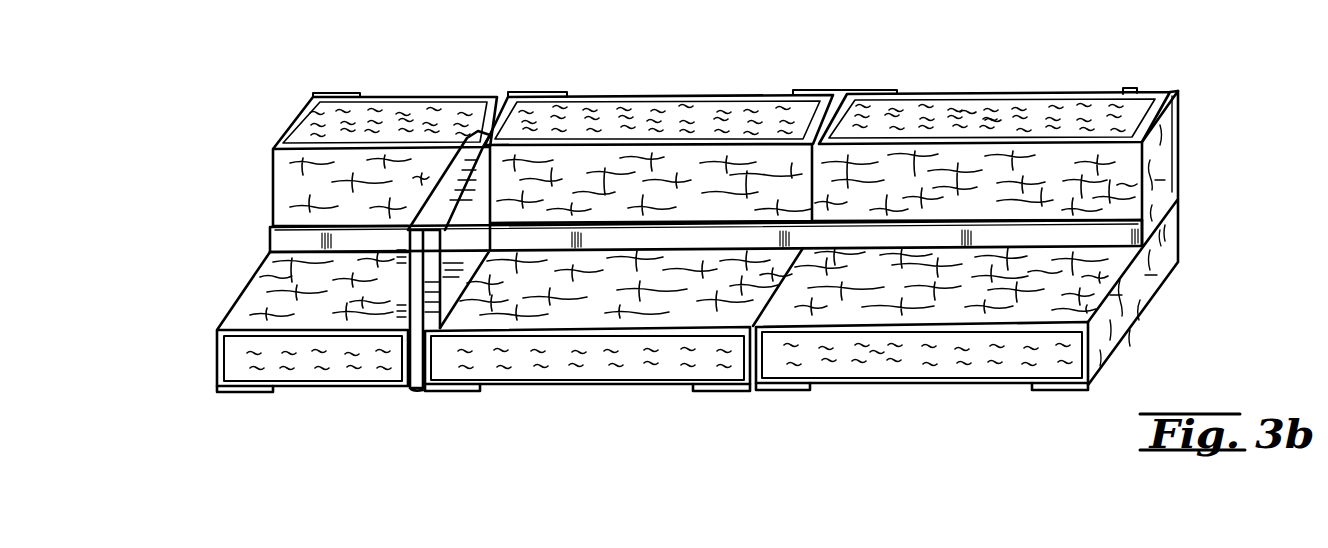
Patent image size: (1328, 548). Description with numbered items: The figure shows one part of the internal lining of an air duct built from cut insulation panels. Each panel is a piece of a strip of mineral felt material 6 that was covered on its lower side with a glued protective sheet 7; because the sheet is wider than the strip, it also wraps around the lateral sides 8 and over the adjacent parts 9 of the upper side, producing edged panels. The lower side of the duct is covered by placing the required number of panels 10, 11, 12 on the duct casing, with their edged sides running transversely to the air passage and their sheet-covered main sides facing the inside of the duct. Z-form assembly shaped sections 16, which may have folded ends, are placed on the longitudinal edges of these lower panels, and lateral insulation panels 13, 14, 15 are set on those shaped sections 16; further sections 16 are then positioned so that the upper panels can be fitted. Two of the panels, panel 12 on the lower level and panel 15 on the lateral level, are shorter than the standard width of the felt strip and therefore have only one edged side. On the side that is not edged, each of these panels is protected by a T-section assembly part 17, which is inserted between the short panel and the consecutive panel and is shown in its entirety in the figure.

The mineral felt material 6 is at (982, 112).
The glued protective sheet 7 is at (1130, 170).
The lateral sides 8 is at (217, 372).
The parts of the upper side 9 is at (787, 389).
The panel 10 is at (955, 380).
The panel 11 is at (593, 386).
The panel 12 is at (320, 388).
The lateral insulation panel 13 is at (1102, 93).
The lateral insulation panel 14 is at (695, 97).
The lateral insulation panel 15 is at (407, 98).
The Z-form assembly shaped section 16 is at (278, 243).
The T-section assembly part 17 is at (432, 308).